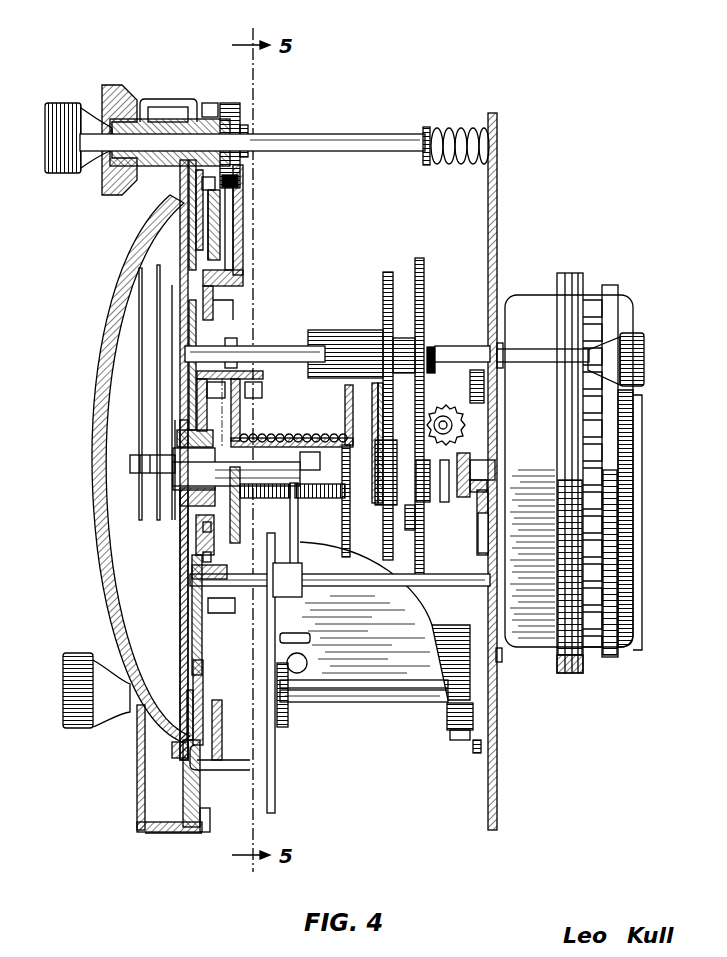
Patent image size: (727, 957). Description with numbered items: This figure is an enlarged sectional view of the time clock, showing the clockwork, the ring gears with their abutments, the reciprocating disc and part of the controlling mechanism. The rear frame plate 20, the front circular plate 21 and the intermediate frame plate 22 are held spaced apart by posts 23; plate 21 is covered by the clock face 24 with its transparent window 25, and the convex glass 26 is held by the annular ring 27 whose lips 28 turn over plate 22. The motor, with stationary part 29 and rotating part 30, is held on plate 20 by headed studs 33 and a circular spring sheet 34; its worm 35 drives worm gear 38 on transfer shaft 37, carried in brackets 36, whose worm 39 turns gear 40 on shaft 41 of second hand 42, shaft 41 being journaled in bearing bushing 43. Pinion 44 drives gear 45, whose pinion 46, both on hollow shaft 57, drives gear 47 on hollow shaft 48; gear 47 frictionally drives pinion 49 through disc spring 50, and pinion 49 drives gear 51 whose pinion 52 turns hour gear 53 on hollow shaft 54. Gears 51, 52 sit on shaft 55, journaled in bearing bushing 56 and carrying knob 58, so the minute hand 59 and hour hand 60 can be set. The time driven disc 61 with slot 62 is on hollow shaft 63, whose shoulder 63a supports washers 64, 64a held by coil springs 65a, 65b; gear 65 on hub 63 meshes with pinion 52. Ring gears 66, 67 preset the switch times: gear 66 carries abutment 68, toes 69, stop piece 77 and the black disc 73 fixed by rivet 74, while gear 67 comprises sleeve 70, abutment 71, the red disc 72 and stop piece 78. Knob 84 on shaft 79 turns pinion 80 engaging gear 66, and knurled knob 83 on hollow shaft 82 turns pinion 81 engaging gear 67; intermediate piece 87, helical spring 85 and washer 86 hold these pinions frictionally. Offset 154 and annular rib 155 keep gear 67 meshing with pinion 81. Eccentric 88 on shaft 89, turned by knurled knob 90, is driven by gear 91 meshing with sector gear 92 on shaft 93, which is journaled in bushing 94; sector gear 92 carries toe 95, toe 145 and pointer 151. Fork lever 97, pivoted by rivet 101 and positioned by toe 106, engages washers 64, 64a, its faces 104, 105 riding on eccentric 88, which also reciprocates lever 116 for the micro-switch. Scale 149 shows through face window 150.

The knob 84 is at (56, 103).
The knurled knob 83 is at (106, 92).
The hollow shaft 82 is at (155, 99).
The pinion gear 81 is at (208, 103).
The intermediate piece 87 is at (227, 103).
The pinion gear 80 is at (248, 120).
The shaft 79 is at (348, 134).
The washer 86 is at (424, 128).
The helical spring 85 is at (460, 128).
The rear frame plate 20 is at (497, 222).
The stop piece 77 is at (216, 215).
The ring gear 67 is at (220, 236).
The ring gear 66 is at (233, 255).
The frame plate 22 is at (243, 277).
The annular offset rib 155 is at (196, 205).
The convex glass 26 is at (118, 282).
The gear 51 is at (385, 272).
The gear 45 is at (421, 258).
The stationary part 29 is at (532, 300).
The rotating part 30 is at (610, 288).
The extended bearing bushing 56 is at (237, 342).
The shaft 55 is at (285, 348).
The pinion gear 52 is at (345, 340).
The pinion gear 46 is at (402, 345).
The gear 47 is at (433, 368).
The hollow shaft 57 is at (462, 348).
The circular spring sheet 34 is at (505, 349).
The knob 58 is at (645, 356).
The second hand 42 is at (140, 380).
The minute hand 59 is at (157, 402).
The hour hand 60 is at (172, 430).
The abutment 71 is at (263, 384).
The abutment 68 is at (263, 396).
The slot 62 is at (245, 392).
The washer 64 is at (290, 426).
The washer 64a is at (300, 437).
The hour gear 53 is at (375, 420).
The hollow shaft 54 is at (380, 462).
The brackets 36 is at (484, 393).
The transfer shaft 37 is at (465, 415).
The worm gear 38 is at (452, 428).
The worm 39 is at (447, 440).
The shaft 41 is at (495, 470).
The annular bearing bushing 43 is at (487, 488).
The headed studs 33 is at (483, 530).
The time driven disc 61 is at (240, 470).
The shoulder 63a is at (310, 463).
The hollow shaft 63 is at (348, 445).
The hollow shaft 48 is at (152, 478).
The sleeve 70 is at (185, 500).
The coil spring 65a is at (262, 498).
The coil spring 65b is at (322, 498).
The pinion gear 49 is at (388, 505).
The pinion gear 44 is at (425, 502).
The gear 40 is at (444, 503).
The worm 35 is at (463, 497).
The annular disc spring 50 is at (408, 530).
The rivet 74 is at (196, 532).
The toes 69 is at (211, 556).
The gear 65 is at (348, 552).
The shaft 93 is at (447, 585).
The metal sheet 73 is at (196, 577).
The annular metal sheet 72 is at (196, 603).
The bushing 94 is at (218, 603).
The posts 23 is at (388, 600).
The toe 95 is at (300, 640).
The transparent window 25 is at (188, 645).
The scale 149 is at (197, 690).
The face window 150 is at (192, 712).
The rivet 101 is at (307, 665).
The face 104 is at (455, 672).
The toe 106 is at (502, 660).
The offset 154 is at (185, 742).
The clock face 24 is at (185, 775).
The gear 91 is at (290, 722).
The fork lever 97 is at (372, 690).
The shaft 89 is at (398, 702).
The eccentric 88 is at (452, 715).
The toe 145 is at (276, 727).
The face 105 is at (458, 740).
The annular ring 27 is at (138, 785).
The sector gear 92 is at (276, 778).
The lever 116 is at (478, 753).
The stop piece 78 is at (218, 732).
The pointer 151 is at (242, 772).
The circular plate 21 is at (175, 833).
The lips 28 is at (204, 832).
The knurled knob 90 is at (80, 655).